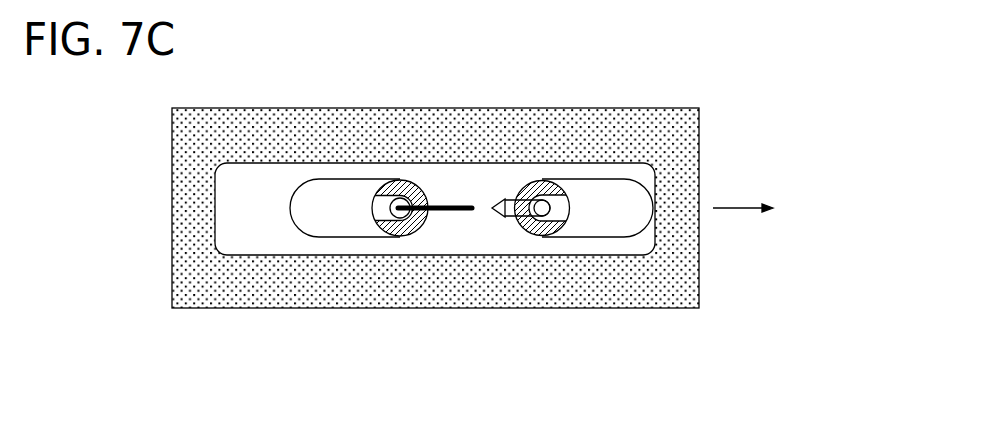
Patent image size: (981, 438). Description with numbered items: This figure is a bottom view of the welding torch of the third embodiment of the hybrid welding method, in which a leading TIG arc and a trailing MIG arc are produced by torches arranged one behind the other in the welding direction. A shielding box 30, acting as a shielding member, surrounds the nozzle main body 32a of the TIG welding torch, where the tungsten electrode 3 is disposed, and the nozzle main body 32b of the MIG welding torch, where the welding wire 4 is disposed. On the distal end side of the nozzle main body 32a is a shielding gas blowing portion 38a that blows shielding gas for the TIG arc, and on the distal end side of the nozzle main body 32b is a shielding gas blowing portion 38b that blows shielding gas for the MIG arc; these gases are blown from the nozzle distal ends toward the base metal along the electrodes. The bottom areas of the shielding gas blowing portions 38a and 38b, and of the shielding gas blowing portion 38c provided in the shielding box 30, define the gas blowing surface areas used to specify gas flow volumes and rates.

The shielding box 30 is at (502, 208).
The shielding gas blowing portion 38c is at (676, 240).
The nozzle main body 32b is at (344, 185).
The nozzle main body 32a is at (600, 188).
The shielding gas blowing portion 38b is at (400, 236).
The shielding gas blowing portion 38a is at (542, 236).
The welding wire 4 is at (437, 203).
The tungsten electrode 3 is at (528, 206).